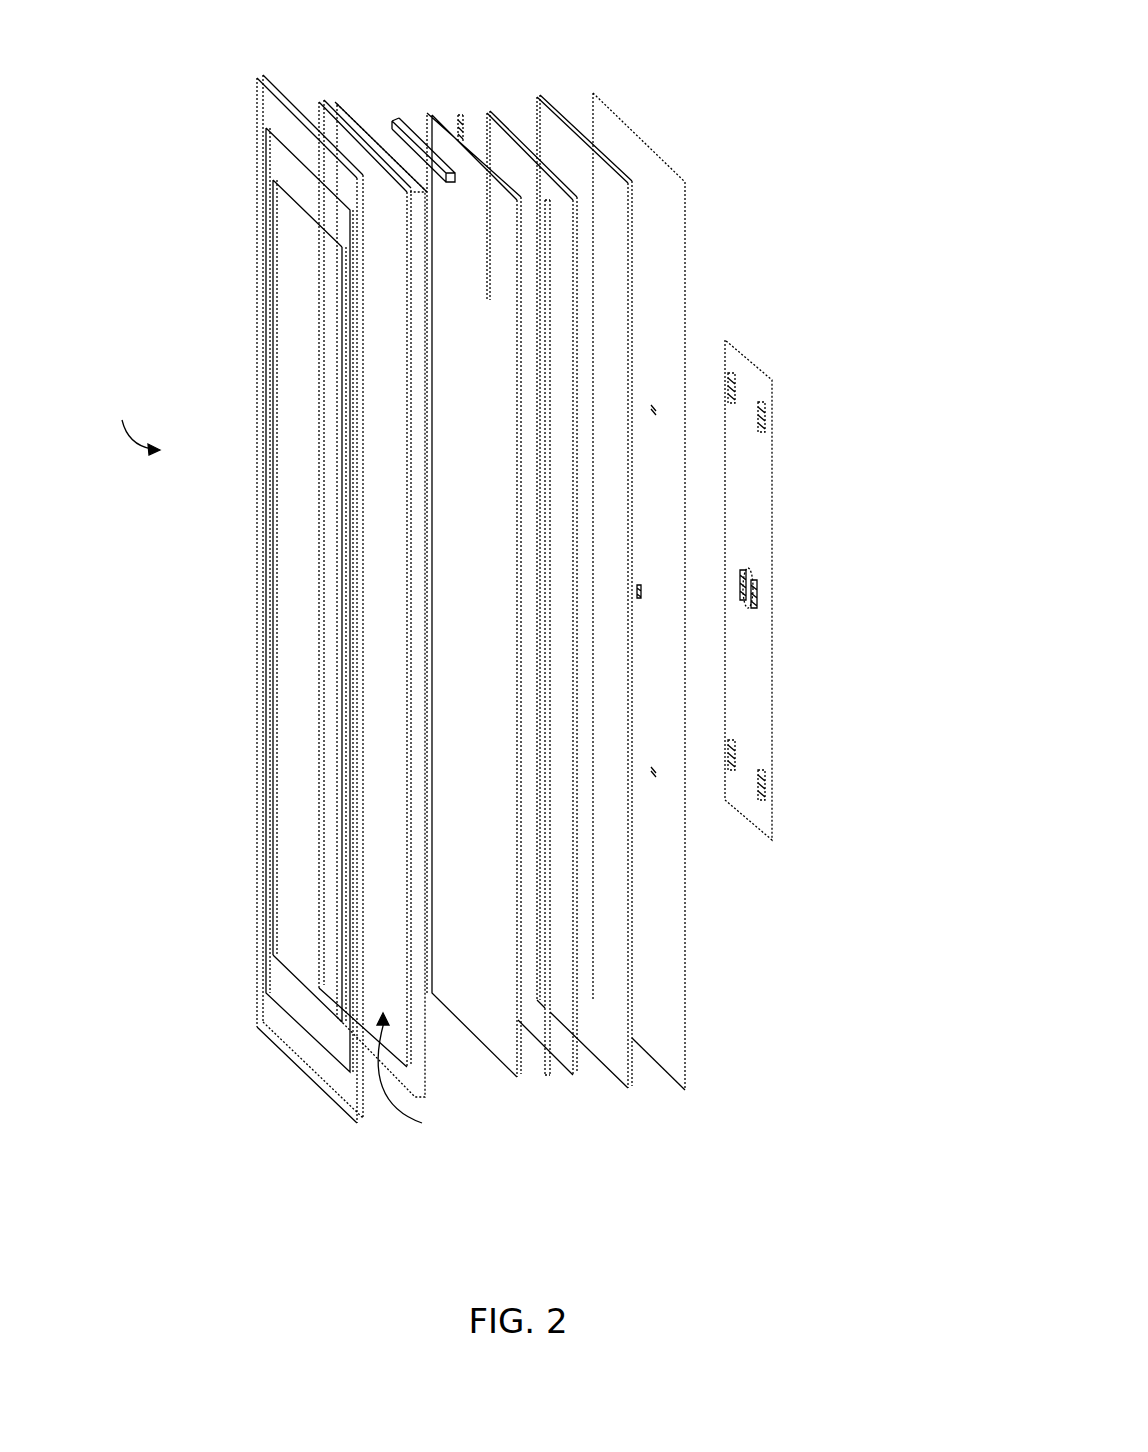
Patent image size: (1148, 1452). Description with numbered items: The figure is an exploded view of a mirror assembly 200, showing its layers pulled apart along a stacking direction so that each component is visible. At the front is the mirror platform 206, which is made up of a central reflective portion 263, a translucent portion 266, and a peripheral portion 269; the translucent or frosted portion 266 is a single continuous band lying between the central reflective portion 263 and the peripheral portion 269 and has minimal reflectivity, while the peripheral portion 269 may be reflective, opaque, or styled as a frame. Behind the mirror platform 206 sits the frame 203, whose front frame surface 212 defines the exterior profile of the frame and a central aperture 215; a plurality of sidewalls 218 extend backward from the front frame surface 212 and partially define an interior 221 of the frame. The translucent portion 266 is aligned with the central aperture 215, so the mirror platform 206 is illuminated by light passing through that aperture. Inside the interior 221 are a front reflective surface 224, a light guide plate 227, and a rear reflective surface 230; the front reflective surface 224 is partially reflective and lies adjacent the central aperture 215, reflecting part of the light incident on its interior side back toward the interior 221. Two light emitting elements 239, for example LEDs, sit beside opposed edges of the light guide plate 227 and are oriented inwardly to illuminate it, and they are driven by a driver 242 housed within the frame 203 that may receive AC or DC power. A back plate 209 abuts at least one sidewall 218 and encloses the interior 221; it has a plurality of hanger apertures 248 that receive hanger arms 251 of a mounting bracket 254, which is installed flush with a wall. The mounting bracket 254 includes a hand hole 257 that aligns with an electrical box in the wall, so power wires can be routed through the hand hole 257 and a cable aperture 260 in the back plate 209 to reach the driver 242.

The mirror assembly 200 is at (130, 423).
The frame 203 is at (328, 120).
The mirror platform 206 is at (262, 104).
The back plate 209 is at (610, 108).
The front frame surface 212 is at (320, 120).
The central aperture 215 is at (410, 1084).
The sidewall 218 is at (342, 115).
The interior 221 is at (403, 760).
The front reflective surface 224 is at (438, 120).
The light guide plate 227 is at (498, 118).
The rear reflective surface 230 is at (547, 100).
The light emitting element 239 is at (462, 118).
The driver 242 is at (407, 122).
The hanger aperture 248 is at (653, 408).
The hanger arm 251 is at (763, 413).
The mounting bracket 254 is at (753, 362).
The hand hole 257 is at (752, 590).
The cable aperture 260 is at (640, 590).
The central reflective portion 263 is at (290, 252).
The translucent portion 266 is at (280, 172).
The peripheral portion 269 is at (278, 125).